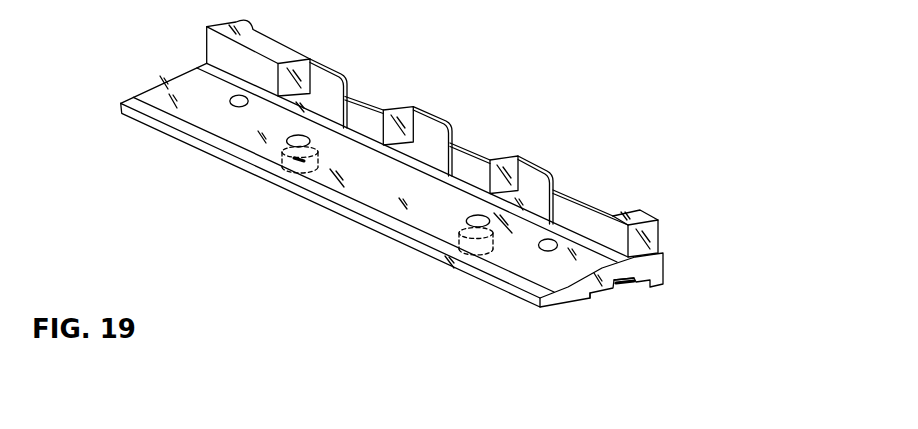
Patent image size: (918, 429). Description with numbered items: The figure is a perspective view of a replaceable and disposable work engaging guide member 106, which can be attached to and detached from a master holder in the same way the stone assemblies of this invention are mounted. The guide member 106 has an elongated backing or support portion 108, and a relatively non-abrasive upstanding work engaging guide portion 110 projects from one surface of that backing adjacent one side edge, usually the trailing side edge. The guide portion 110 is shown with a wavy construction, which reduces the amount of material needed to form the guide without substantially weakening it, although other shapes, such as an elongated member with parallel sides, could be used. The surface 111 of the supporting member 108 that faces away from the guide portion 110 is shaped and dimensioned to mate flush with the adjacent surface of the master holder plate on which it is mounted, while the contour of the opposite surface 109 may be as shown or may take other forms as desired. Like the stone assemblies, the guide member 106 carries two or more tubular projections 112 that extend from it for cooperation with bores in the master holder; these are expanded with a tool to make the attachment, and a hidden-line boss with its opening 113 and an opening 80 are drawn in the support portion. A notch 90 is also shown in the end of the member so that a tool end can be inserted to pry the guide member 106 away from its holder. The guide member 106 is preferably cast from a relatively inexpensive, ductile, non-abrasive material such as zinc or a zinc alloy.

The work engaging guide member 106 is at (484, 90).
The upstanding work engaging guide portion 110 is at (538, 161).
The opposite surface 109 is at (383, 163).
The mounting holes 80 is at (246, 97).
The boss top openings 113 is at (292, 147).
The tubular projections 112 is at (285, 170).
The backing or support portion 108 is at (583, 297).
The surface of the supporting member 111 is at (577, 298).
The notch 90 is at (645, 302).